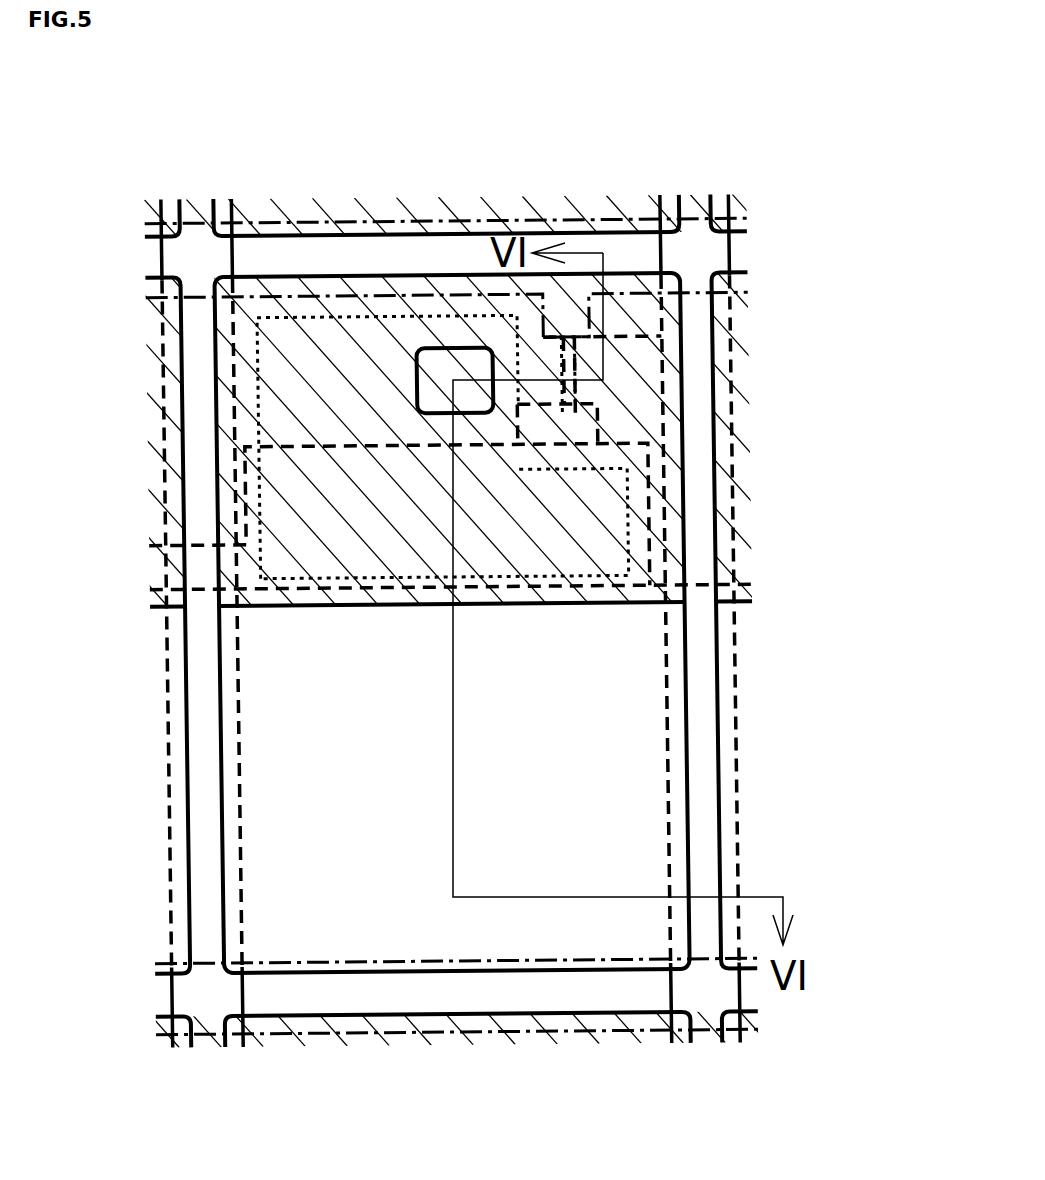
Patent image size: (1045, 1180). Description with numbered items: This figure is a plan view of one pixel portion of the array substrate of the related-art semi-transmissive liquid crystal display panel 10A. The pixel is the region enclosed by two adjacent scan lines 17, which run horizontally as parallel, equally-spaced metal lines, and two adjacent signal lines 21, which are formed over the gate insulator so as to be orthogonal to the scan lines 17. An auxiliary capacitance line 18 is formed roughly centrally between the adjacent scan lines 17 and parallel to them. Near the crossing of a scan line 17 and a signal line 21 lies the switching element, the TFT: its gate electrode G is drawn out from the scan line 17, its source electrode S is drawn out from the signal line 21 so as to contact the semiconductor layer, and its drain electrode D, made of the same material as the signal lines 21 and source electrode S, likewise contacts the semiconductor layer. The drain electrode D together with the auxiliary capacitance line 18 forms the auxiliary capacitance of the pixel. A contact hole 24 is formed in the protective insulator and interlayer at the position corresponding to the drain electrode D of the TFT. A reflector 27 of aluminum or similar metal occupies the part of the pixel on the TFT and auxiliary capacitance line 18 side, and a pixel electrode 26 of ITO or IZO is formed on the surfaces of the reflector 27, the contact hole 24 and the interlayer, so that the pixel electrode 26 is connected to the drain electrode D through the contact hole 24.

The semi-transmissive liquid crystal display panel 10A is at (800, 126).
The scan lines 17 is at (300, 257).
The signal lines 21 is at (205, 453).
The contact hole 24 is at (443, 355).
The pixel electrode 26 is at (358, 872).
The reflector 27 is at (410, 551).
The auxiliary capacitance line 18 is at (225, 567).
The source electrode S is at (600, 402).
The gate electrode G is at (623, 417).
The drain electrode D is at (550, 507).
The element TFT is at (822, 550).